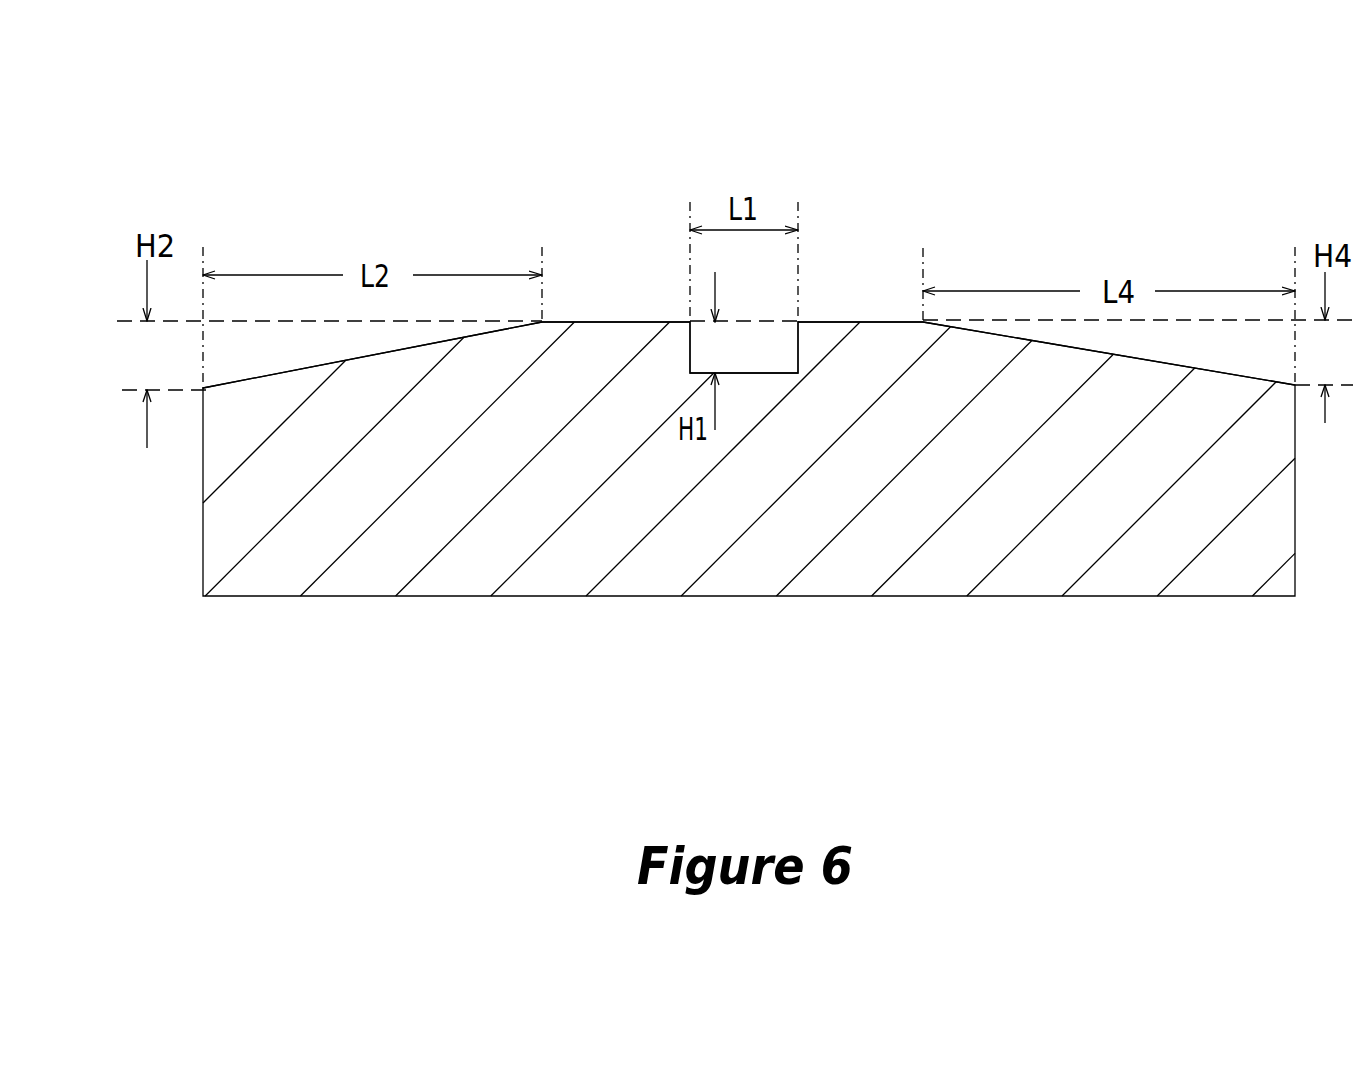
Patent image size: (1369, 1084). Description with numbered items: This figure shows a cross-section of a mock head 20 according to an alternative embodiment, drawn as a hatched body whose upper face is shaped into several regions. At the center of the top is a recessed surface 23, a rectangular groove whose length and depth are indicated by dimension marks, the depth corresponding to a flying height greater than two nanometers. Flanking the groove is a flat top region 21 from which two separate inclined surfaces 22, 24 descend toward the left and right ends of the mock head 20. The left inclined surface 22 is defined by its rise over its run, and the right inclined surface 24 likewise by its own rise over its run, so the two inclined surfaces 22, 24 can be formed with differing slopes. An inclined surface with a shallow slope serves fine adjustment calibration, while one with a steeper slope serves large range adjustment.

The mock head 20 is at (363, 498).
The flat top surface 21 is at (900, 322).
The inclined surface 22 is at (292, 368).
The recessed surface 23 is at (737, 373).
The inclined surface 24 is at (1158, 357).